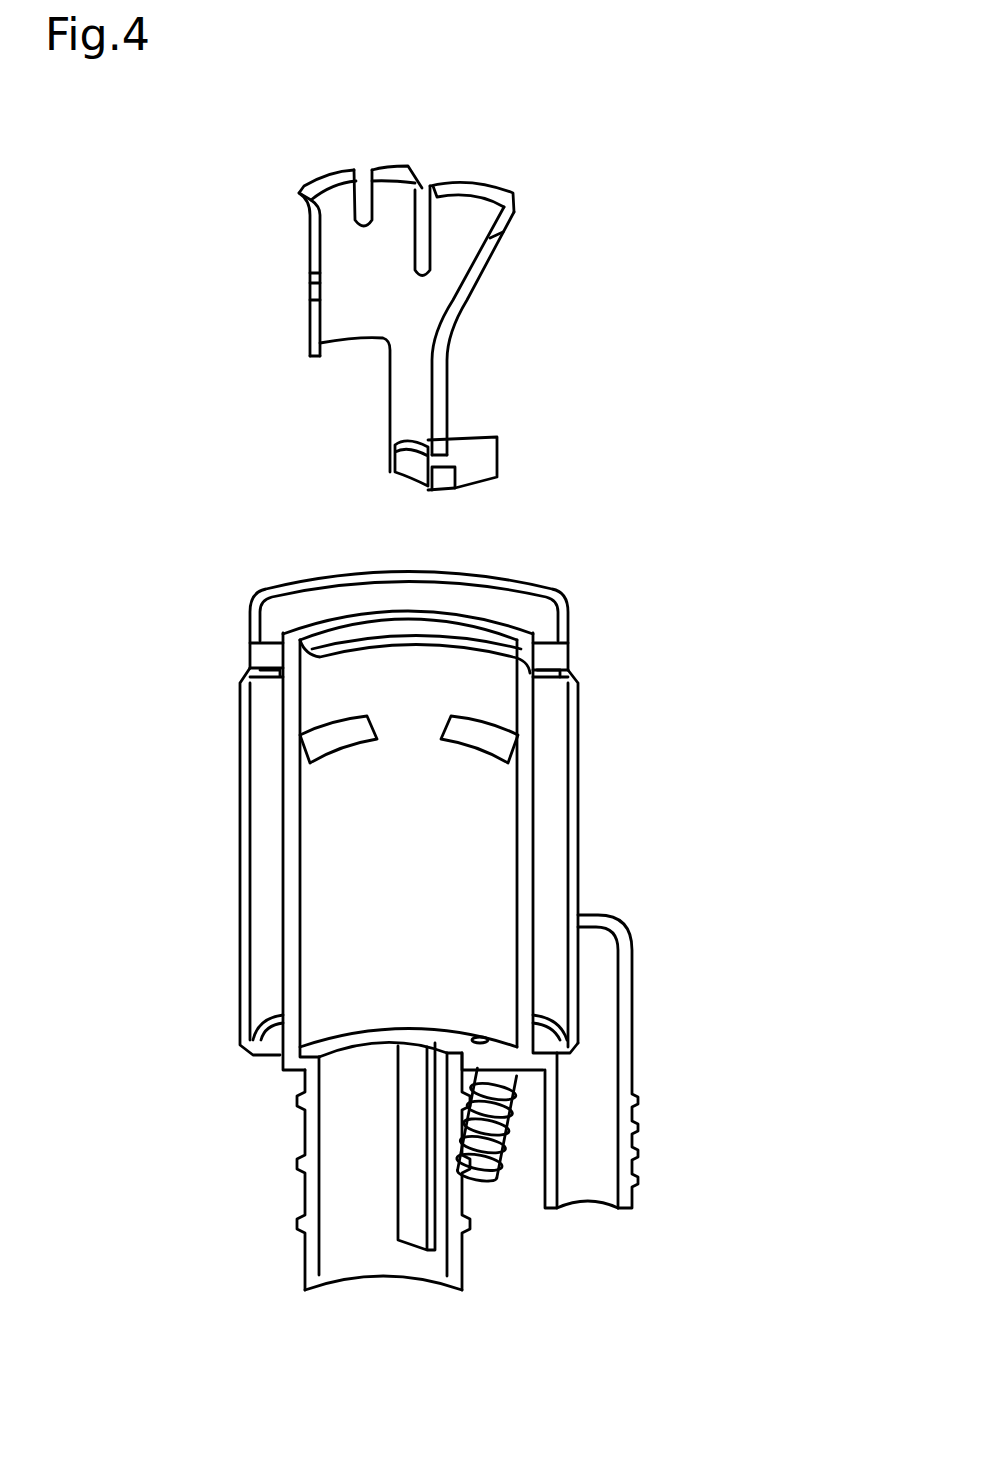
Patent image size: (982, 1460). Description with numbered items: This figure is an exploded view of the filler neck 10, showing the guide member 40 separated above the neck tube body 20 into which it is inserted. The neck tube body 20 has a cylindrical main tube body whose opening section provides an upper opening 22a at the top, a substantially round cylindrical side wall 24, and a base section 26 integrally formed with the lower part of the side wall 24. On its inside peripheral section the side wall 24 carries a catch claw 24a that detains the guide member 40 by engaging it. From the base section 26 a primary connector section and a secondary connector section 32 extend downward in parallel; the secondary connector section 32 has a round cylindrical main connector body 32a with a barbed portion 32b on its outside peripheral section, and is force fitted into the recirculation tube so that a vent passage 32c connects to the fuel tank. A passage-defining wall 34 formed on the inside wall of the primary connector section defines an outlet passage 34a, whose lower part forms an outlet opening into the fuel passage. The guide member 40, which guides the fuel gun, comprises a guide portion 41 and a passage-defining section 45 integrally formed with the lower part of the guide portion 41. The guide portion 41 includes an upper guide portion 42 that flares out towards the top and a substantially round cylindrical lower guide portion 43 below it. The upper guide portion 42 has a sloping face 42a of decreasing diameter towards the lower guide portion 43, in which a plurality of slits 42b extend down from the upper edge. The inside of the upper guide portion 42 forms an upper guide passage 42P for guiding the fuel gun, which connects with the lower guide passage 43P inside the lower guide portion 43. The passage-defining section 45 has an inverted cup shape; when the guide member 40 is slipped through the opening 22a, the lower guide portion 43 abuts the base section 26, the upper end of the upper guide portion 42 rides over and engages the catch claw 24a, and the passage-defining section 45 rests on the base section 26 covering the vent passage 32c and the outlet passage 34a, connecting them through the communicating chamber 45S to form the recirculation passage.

The filler neck 10 is at (677, 226).
The guide member 40 is at (626, 273).
The guide portion 41 is at (460, 298).
The upper guide portion 42 is at (350, 262).
The sloping face 42a is at (462, 246).
The slits 42b is at (428, 232).
The upper guide passage 42P is at (372, 307).
The lower guide portion 43 is at (385, 390).
The lower guide passage 43P is at (402, 418).
The passage-defining section 45 is at (485, 455).
The communicating chamber 45S is at (440, 483).
The neck tube body 20 is at (537, 727).
The upper opening 22a is at (470, 640).
The side wall 24 is at (535, 863).
The catch claw 24a is at (505, 745).
The base section 26 is at (447, 1033).
The secondary connector section 32 is at (632, 1282).
The main connector body 32a is at (537, 1133).
The barbed portion 32b is at (490, 1170).
The vent passage 32c is at (574, 1043).
The passage-defining wall 34 is at (415, 1208).
The outlet passage 34a is at (437, 1210).